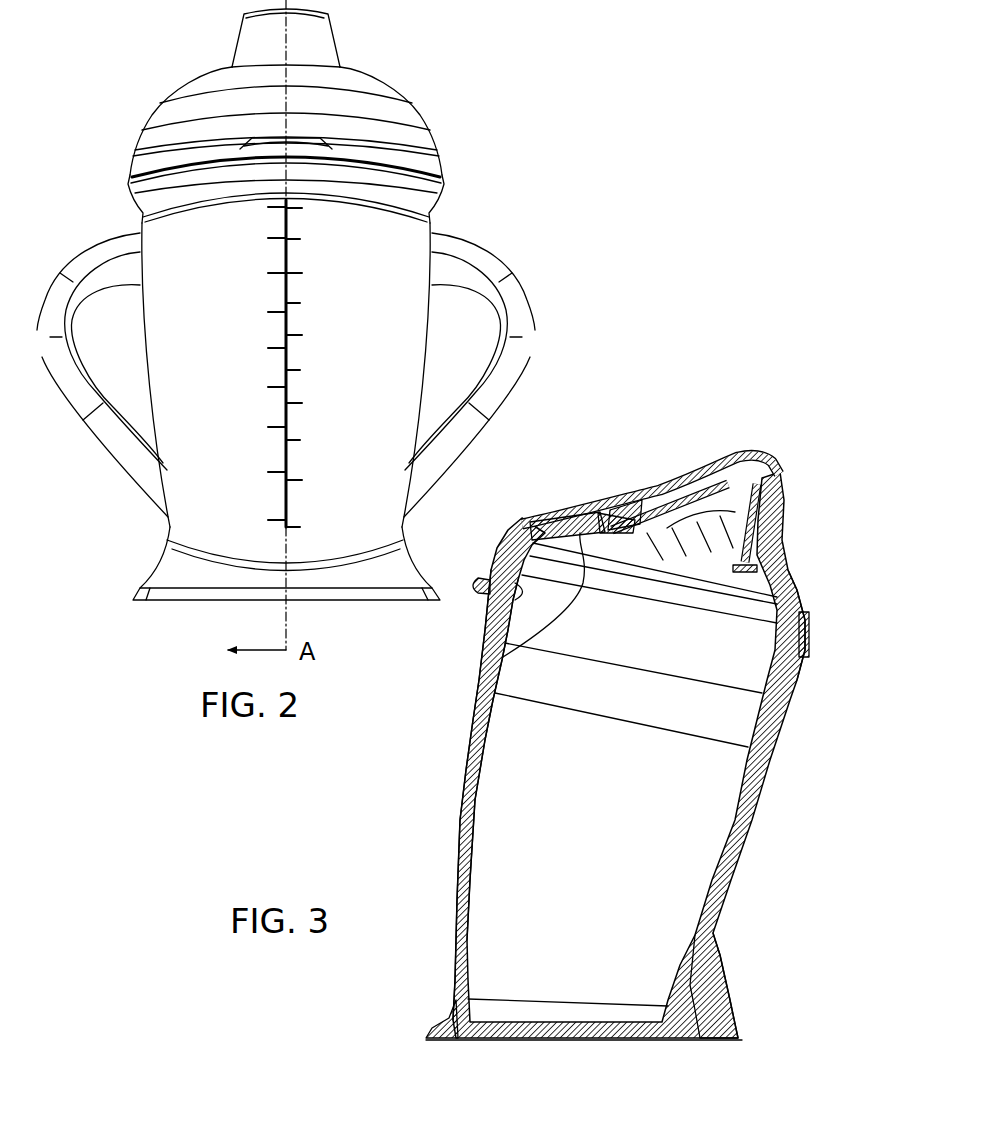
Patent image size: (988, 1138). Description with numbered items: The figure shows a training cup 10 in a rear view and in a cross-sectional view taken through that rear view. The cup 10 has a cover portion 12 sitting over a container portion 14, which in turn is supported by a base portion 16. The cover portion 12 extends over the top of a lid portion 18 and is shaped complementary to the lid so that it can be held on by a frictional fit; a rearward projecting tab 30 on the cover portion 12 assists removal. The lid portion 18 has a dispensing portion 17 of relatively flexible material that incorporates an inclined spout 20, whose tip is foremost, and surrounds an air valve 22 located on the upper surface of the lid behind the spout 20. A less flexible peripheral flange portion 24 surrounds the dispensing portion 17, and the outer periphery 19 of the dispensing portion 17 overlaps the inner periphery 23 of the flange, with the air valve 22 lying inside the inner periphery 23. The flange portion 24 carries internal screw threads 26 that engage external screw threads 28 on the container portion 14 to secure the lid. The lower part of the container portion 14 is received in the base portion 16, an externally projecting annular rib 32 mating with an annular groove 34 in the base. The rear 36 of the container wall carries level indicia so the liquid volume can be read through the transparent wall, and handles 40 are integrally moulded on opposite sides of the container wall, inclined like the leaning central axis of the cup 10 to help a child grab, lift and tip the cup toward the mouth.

In FIG. 2, the training cup 10 is at (622, 282).
In FIG. 3, the cover portion 12 is at (663, 485).
In FIG. 2, the container portion 14 is at (163, 524).
In FIG. 3, the container portion 14 is at (460, 834).
In FIG. 3, the base portion 16 is at (434, 1040).
In FIG. 3, the dispensing portion 17 is at (668, 512).
In FIG. 3, the lid portion 18 is at (624, 517).
In FIG. 3, the outer periphery 19 is at (560, 521).
In FIG. 3, the spout 20 is at (778, 477).
In FIG. 3, the air valve 22 is at (620, 508).
In FIG. 3, the inner periphery 23 is at (503, 657).
In FIG. 3, the peripheral flange portion 24 is at (827, 590).
In FIG. 3, the internal screw threads 26 is at (840, 633).
In FIG. 3, the external screw threads 28 is at (523, 590).
In FIG. 2, the rearward projecting tab 30 is at (300, 146).
In FIG. 3, the rearward projecting tab 30 is at (470, 578).
In FIG. 3, the annular rib 32 is at (455, 972).
In FIG. 3, the annular groove 34 is at (443, 1013).
In FIG. 2, the rear of the container wall 36 is at (330, 363).
In FIG. 2, the handles 40 is at (92, 256).